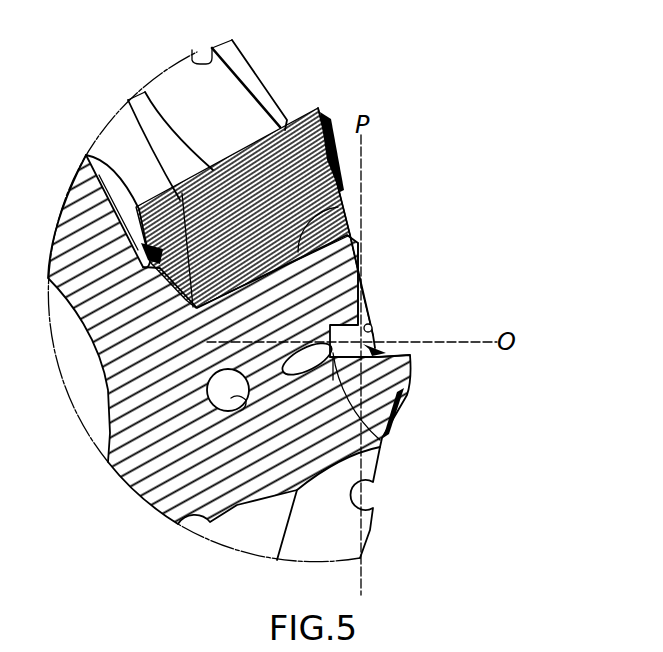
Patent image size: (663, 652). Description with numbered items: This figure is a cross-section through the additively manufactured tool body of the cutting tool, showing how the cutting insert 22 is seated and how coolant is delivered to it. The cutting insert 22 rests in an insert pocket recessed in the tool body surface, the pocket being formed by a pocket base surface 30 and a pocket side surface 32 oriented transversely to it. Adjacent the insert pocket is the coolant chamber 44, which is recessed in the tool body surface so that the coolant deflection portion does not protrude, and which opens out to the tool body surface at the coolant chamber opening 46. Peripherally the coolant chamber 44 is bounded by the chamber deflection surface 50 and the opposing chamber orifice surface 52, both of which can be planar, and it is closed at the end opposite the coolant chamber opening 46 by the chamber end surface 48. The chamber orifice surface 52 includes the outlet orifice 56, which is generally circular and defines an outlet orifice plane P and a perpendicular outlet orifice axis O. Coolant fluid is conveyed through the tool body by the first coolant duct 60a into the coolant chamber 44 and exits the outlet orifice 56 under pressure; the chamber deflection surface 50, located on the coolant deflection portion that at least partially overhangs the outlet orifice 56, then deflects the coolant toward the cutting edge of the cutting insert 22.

The cutting insert 22 is at (322, 98).
The pocket side surface 32 is at (127, 104).
The pocket base surface 30 is at (340, 208).
The chamber orifice surface 52 is at (375, 298).
The coolant chamber opening 46 is at (378, 292).
The chamber deflection surface 50 is at (374, 322).
The coolant chamber 44 is at (380, 333).
The outlet orifice 56 is at (374, 355).
The chamber end surface 48 is at (403, 397).
The first coolant duct 60a is at (380, 446).